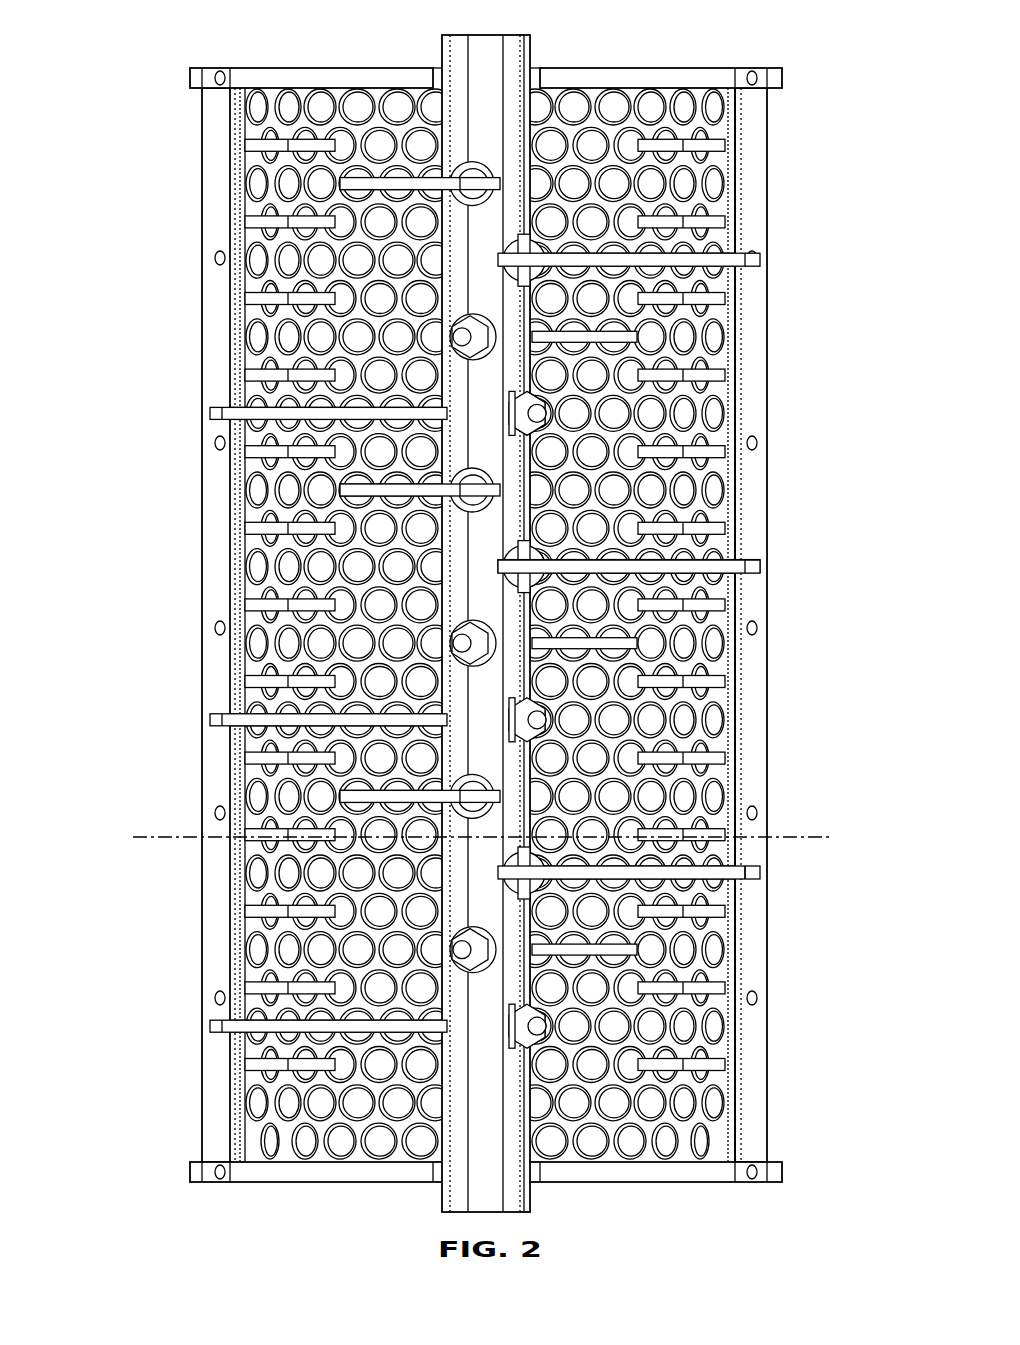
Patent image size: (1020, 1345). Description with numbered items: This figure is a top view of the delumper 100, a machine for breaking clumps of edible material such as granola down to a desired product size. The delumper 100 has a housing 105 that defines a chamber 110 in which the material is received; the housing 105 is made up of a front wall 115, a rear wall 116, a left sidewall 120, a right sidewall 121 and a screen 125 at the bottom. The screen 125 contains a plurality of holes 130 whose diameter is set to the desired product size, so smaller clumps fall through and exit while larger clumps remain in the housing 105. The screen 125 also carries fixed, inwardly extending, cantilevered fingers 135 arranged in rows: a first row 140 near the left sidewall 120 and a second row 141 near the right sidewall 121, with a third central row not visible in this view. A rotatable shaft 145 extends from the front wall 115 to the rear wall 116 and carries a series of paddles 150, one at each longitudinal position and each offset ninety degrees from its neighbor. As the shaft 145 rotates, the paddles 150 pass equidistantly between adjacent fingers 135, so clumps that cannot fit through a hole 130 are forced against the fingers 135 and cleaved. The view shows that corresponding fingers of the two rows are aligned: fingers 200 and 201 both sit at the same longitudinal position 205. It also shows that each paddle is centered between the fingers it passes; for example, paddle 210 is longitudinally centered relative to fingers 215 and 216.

The delumper 100 is at (118, 75).
The housing 105 is at (258, 76).
The chamber 110 is at (315, 103).
The front wall 115 is at (310, 1172).
The rear wall 116 is at (700, 67).
The left sidewall 120 is at (202, 297).
The right sidewall 121 is at (767, 292).
The screen 125 is at (730, 1140).
The hole 130 is at (730, 1035).
The finger 135 is at (262, 990).
The first row 140 is at (260, 1068).
The second row 141 is at (658, 1078).
The rotatable shaft 145 is at (485, 367).
The paddle 150 is at (320, 490).
The finger 200 is at (270, 845).
The finger 201 is at (700, 840).
The longitudinal position 205 is at (818, 832).
The paddle 210 is at (680, 567).
The finger 215 is at (700, 527).
The finger 216 is at (700, 607).